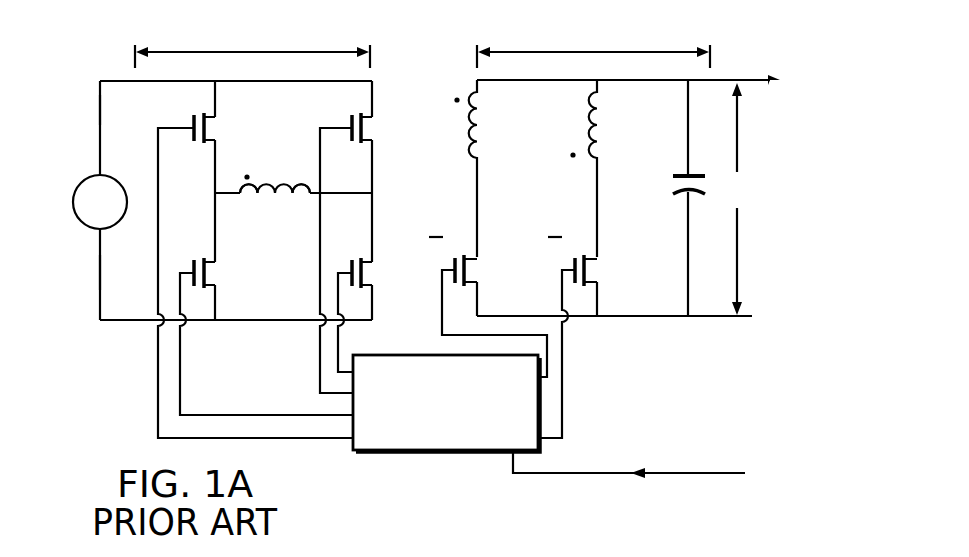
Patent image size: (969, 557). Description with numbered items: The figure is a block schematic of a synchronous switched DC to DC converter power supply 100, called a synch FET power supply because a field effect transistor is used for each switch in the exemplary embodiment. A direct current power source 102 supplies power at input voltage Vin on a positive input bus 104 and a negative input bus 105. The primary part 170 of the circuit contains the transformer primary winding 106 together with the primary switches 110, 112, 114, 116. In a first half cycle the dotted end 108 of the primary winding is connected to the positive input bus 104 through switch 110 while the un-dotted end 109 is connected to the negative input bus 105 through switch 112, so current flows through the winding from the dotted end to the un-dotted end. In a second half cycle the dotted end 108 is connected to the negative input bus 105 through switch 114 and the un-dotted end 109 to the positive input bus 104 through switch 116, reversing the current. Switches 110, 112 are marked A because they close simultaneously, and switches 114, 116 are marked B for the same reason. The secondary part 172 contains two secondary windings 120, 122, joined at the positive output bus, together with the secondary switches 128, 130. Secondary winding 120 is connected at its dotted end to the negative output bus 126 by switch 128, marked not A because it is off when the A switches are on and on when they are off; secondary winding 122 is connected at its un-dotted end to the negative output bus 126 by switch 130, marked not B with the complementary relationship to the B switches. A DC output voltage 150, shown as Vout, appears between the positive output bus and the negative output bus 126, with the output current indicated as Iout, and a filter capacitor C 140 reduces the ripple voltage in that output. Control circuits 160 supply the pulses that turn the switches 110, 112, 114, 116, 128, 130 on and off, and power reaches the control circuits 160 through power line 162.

The synchronous switched DC to DC converter power supply 100 is at (216, 16).
The direct current power source 102 is at (73, 205).
The positive input bus 104 is at (100, 110).
The negative input bus 105 is at (100, 270).
The transformer primary winding 106 is at (252, 204).
The dotted end of the primary winding 108 is at (227, 187).
The un-dotted end of the primary winding 109 is at (296, 204).
The switch 110 is at (214, 124).
The switch 112 is at (373, 274).
The switch 114 is at (214, 274).
The switch 116 is at (373, 125).
The secondary winding 120 is at (600, 112).
The secondary winding 122 is at (483, 112).
The negative output bus 126 is at (655, 318).
The switch 128 is at (600, 272).
The switch 130 is at (480, 272).
The filter capacitor C 140 is at (673, 190).
The DC output voltage Vout 150 is at (776, 191).
The control circuits 160 is at (430, 452).
The power line 162 is at (584, 473).
The primary part of the circuit 170 is at (284, 50).
The secondary part of the circuit 172 is at (627, 50).